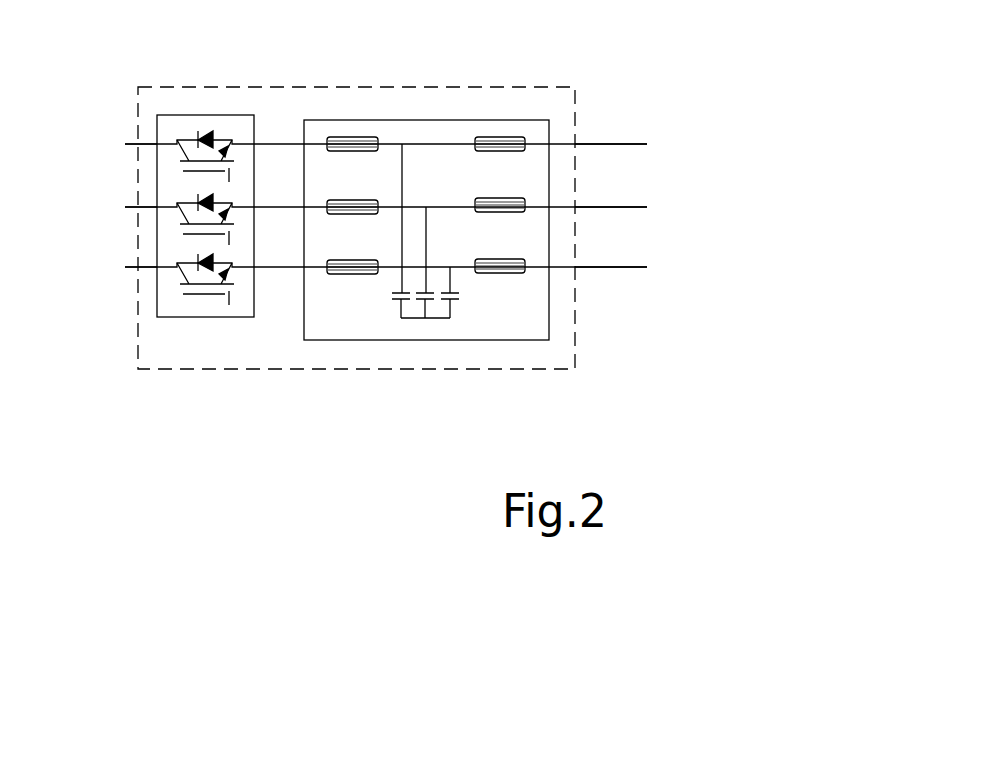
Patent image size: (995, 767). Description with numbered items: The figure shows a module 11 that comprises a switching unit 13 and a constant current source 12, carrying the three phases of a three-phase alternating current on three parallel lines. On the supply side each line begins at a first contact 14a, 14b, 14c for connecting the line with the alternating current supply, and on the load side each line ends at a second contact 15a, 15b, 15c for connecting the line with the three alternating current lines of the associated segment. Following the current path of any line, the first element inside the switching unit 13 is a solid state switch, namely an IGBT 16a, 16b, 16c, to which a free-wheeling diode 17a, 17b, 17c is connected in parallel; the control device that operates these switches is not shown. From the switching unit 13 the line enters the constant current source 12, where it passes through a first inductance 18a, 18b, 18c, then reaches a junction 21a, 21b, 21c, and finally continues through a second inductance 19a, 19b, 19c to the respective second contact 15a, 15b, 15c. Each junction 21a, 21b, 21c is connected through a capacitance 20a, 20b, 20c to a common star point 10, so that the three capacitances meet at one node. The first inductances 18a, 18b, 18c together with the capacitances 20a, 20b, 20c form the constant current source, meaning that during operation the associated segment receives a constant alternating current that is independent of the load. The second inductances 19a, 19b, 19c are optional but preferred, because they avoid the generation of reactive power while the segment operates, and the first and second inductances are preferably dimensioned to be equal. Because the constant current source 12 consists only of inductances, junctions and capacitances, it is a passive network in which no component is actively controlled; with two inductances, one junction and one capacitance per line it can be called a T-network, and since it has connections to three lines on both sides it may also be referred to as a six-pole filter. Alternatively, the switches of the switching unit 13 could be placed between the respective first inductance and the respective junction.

The star point 10 is at (425, 319).
The module 11 is at (563, 370).
The constant current source 12 is at (427, 319).
The switching unit 13 is at (177, 318).
The first contact 14a is at (128, 268).
The first contact 14b is at (128, 208).
The first contact 14c is at (128, 145).
The second contact 15a is at (623, 268).
The second contact 15b is at (623, 207).
The second contact 15c is at (623, 145).
The IGBT 16a is at (208, 294).
The IGBT 16b is at (229, 231).
The IGBT 16c is at (230, 168).
The free-wheeling diode 17a is at (208, 263).
The free-wheeling diode 17b is at (208, 198).
The free-wheeling diode 17c is at (203, 136).
The first inductance 18a is at (341, 275).
The first inductance 18b is at (352, 199).
The first inductance 18c is at (335, 137).
The second inductance 19a is at (517, 273).
The second inductance 19b is at (505, 197).
The second inductance 19c is at (507, 137).
The capacitance 20a is at (460, 298).
The capacitance 20b is at (423, 299).
The capacitance 20c is at (397, 299).
The junction 21a is at (453, 268).
The junction 21b is at (426, 207).
The junction 21c is at (402, 143).